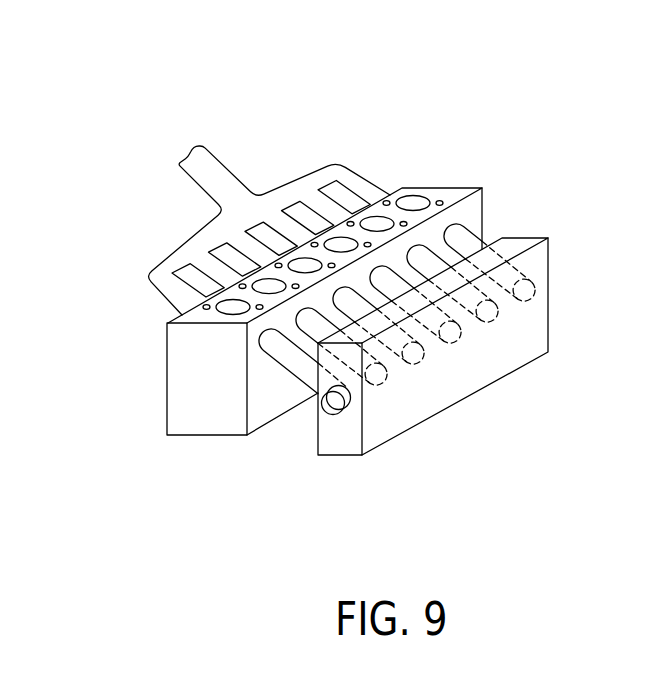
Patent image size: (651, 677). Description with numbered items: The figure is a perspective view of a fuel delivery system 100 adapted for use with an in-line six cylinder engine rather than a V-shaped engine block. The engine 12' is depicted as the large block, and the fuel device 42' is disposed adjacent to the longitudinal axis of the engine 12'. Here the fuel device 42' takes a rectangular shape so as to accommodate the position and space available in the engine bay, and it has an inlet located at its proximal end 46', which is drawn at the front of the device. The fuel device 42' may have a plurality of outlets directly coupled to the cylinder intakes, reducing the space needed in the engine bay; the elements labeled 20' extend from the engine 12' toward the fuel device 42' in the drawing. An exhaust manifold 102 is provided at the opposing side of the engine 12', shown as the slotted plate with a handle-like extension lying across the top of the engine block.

The fuel delivery system 100 is at (310, 249).
The exhaust manifold 102 is at (269, 205).
The engine 12' is at (324, 341).
The tubes / pins 20' is at (397, 282).
The fuel device 42' is at (433, 355).
The proximal end 46' is at (304, 429).